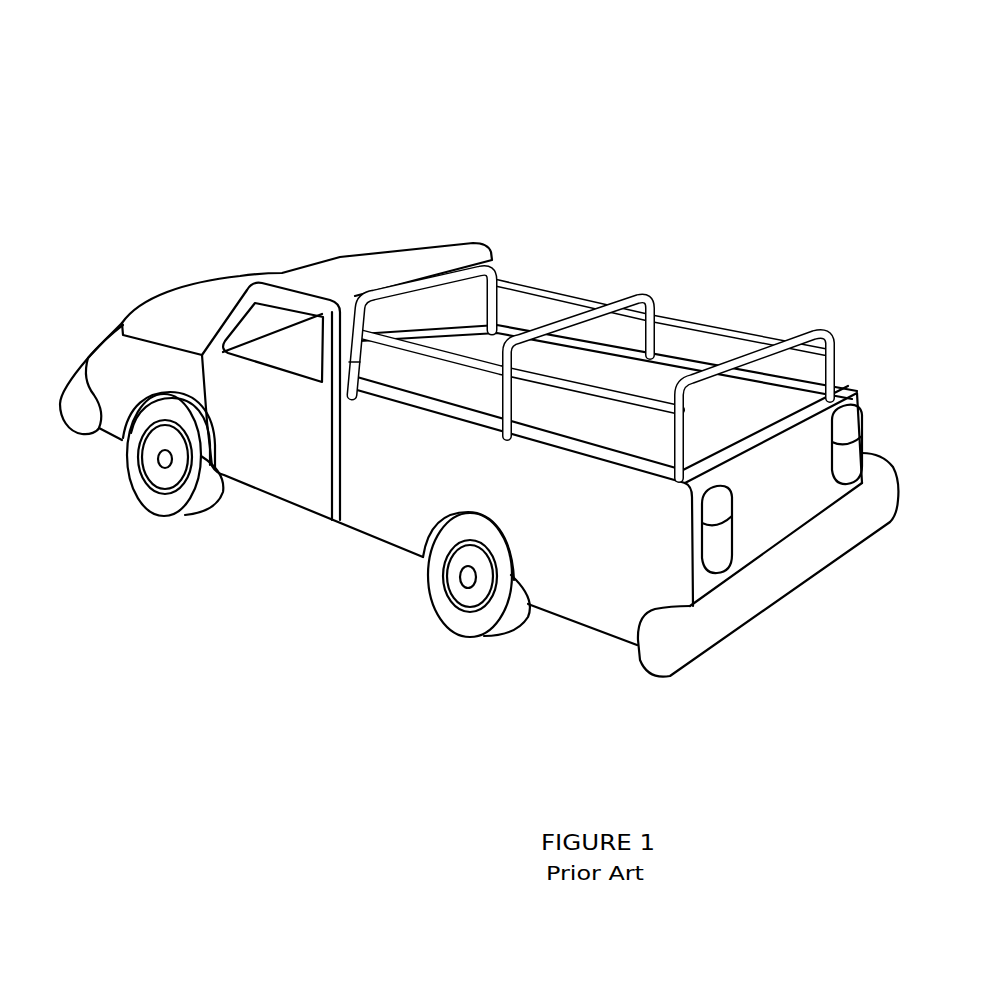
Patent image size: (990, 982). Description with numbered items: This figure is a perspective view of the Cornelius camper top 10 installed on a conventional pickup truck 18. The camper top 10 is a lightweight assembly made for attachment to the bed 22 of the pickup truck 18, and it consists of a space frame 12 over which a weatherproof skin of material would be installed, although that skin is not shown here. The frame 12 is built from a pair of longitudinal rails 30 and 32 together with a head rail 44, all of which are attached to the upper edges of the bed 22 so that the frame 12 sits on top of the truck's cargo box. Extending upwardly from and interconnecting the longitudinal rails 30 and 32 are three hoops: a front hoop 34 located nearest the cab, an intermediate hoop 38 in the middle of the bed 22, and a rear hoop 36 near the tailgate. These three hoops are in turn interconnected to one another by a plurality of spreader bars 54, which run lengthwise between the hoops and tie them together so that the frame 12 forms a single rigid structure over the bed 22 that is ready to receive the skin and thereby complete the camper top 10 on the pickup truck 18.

The camper top 10 is at (686, 125).
The space frame 12 is at (850, 319).
The pickup truck 18 is at (373, 265).
The bed 22 is at (740, 423).
The longitudinal rail 30 is at (797, 387).
The longitudinal rail 32 is at (447, 408).
The front hoop 34 is at (468, 265).
The rear hoop 36 is at (797, 333).
The intermediate hoop 38 is at (643, 290).
The head rail 44 is at (382, 362).
The spreader bar 54 is at (632, 403).